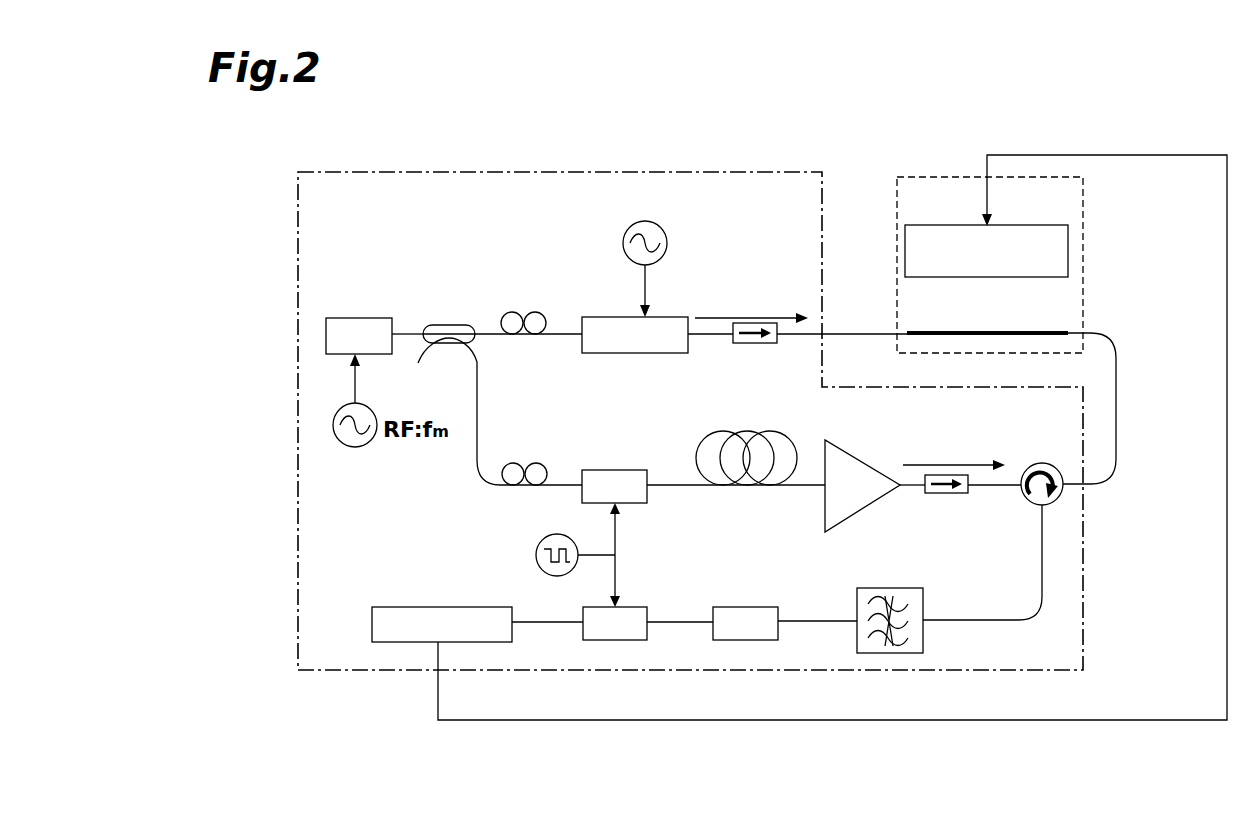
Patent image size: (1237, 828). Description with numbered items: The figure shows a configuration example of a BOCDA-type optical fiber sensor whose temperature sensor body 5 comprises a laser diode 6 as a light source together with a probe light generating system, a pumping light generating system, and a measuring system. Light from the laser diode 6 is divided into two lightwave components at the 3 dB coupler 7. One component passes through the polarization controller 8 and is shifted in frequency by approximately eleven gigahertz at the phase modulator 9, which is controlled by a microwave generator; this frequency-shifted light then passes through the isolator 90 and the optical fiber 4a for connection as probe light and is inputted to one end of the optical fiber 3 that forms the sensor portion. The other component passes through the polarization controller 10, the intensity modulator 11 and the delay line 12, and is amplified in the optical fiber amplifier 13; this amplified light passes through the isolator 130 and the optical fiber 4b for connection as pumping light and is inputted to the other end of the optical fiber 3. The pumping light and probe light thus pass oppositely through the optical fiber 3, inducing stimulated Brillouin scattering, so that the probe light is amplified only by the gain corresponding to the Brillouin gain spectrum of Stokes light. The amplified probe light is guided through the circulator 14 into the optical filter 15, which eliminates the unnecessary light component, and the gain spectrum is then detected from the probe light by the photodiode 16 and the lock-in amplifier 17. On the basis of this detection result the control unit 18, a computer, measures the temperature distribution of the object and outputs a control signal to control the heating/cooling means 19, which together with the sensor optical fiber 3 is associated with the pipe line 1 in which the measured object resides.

The pipe line 1 is at (927, 175).
The optical fiber 3 is at (1028, 331).
The optical fiber for connection 4a is at (850, 333).
The optical fiber for connection 4b is at (1117, 372).
The temperature sensor body 5 is at (418, 168).
The laser diode 6 is at (358, 318).
The 3 dB coupler 7 is at (433, 330).
The polarization controller 8 is at (512, 312).
The phase modulator 9 is at (615, 353).
The isolator 90 is at (755, 343).
The polarization controller 10 is at (514, 463).
The intensity modulator 11 is at (647, 496).
The delay line 12 is at (715, 440).
The optical fiber amplifier 13 is at (823, 515).
The isolator 130 is at (945, 494).
The circulator 14 is at (1033, 504).
The optical filter 15 is at (923, 600).
The photodiode 16 is at (738, 607).
The lock-in amplifier 17 is at (628, 607).
The control unit 18 is at (372, 617).
The heating/cooling means 19 is at (1028, 225).